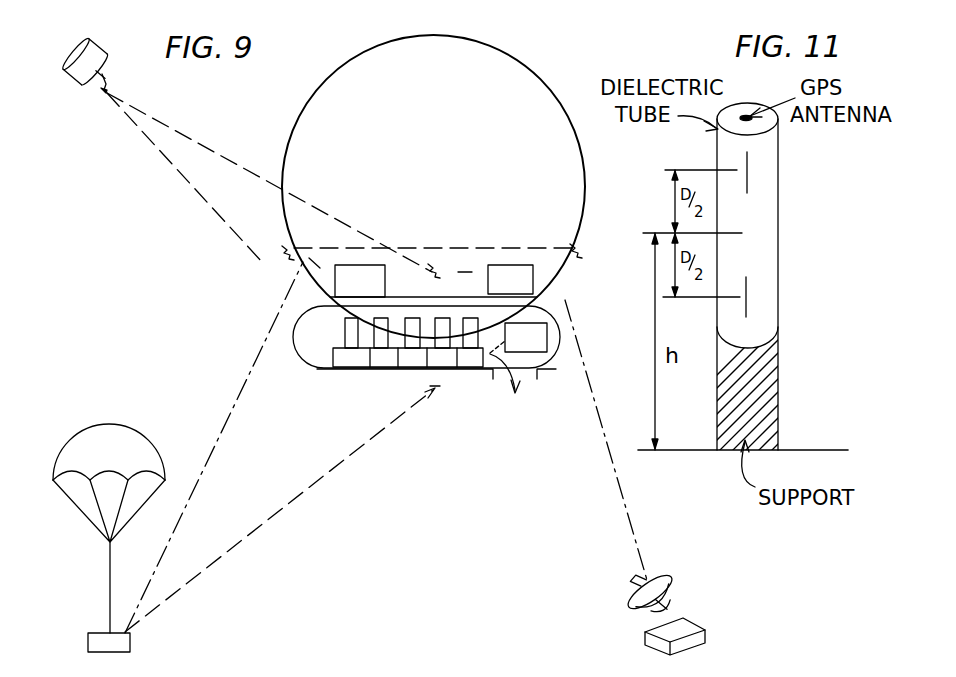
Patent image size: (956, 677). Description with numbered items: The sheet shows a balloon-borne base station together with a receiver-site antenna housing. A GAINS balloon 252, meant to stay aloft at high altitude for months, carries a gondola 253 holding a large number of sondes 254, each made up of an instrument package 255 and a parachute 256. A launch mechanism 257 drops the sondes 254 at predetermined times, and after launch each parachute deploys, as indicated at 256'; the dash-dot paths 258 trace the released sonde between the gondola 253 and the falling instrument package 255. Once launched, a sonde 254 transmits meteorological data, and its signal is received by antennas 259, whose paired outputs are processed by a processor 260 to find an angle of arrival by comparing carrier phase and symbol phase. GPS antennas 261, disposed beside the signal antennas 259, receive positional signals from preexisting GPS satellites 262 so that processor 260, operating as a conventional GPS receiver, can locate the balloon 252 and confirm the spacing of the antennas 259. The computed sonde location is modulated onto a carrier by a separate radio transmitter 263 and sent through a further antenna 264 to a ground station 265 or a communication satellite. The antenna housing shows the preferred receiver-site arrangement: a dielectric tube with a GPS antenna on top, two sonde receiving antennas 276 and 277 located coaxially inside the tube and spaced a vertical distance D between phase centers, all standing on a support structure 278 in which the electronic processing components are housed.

In FIG. 9, the GAINS balloon 252 is at (448, 133).
In FIG. 9, the gondola 253 is at (317, 371).
In FIG. 9, the sonde 254 is at (318, 341).
In FIG. 9, the instrument package 255 is at (383, 363).
In FIG. 9, the parachute 256 is at (390, 280).
In FIG. 9, the deployed parachute 256' is at (122, 514).
In FIG. 9, the launch mechanism 257 is at (540, 347).
In FIG. 9, the deployment path 258 is at (287, 492).
In FIG. 9, the antenna 259 is at (315, 263).
In FIG. 9, the processor 260 is at (373, 292).
In FIG. 9, the GPS antenna 261 is at (284, 248).
In FIG. 9, the GPS satellite 262 is at (100, 68).
In FIG. 9, the radio transmitter 263 is at (524, 291).
In FIG. 9, the further antenna 264 is at (567, 297).
In FIG. 9, the ground station 265 is at (697, 624).
In FIG. 11, the sonde receiving antenna 276 is at (747, 180).
In FIG. 11, the sonde receiving antenna 277 is at (746, 300).
In FIG. 11, the support structure 278 is at (760, 400).